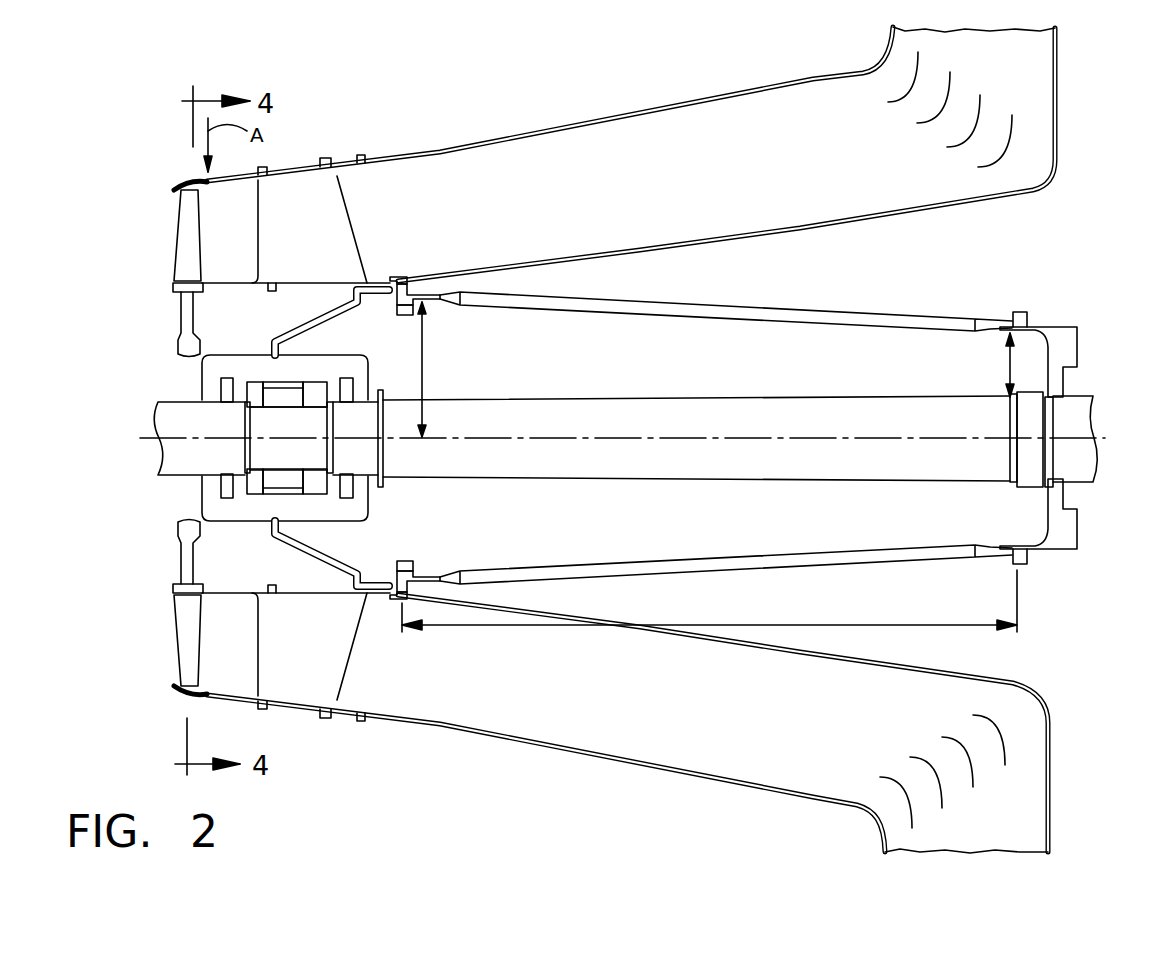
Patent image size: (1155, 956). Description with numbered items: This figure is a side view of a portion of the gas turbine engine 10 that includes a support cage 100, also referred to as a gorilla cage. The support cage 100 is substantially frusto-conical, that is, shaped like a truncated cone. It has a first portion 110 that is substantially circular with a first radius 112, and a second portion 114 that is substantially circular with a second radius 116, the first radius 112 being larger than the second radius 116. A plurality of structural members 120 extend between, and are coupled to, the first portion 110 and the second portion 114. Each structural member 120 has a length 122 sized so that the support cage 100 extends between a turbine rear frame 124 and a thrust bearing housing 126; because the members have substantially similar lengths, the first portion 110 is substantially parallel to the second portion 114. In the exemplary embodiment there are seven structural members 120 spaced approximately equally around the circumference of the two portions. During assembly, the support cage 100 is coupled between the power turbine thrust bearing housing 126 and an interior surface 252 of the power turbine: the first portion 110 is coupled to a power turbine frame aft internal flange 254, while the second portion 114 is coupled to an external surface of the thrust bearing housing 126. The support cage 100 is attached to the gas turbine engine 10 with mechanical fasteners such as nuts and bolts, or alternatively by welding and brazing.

The gas turbine engine 10 is at (528, 70).
The support cage 100 is at (791, 409).
The first portion 110 is at (410, 318).
The first radius 112 is at (424, 372).
The second portion 114 is at (1015, 310).
The second radius 116 is at (1008, 365).
The structural members 120 is at (642, 316).
The length 122 is at (768, 625).
The turbine rear frame 124 is at (334, 310).
The thrust bearing housing 126 is at (1038, 322).
The interior surface 252 is at (407, 290).
The power turbine frame aft internal flange 254 is at (397, 277).